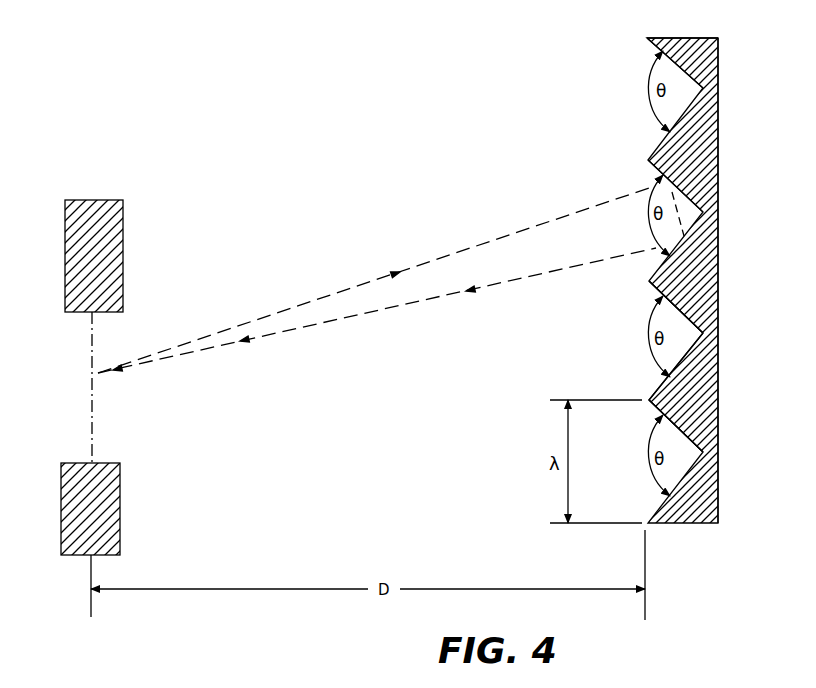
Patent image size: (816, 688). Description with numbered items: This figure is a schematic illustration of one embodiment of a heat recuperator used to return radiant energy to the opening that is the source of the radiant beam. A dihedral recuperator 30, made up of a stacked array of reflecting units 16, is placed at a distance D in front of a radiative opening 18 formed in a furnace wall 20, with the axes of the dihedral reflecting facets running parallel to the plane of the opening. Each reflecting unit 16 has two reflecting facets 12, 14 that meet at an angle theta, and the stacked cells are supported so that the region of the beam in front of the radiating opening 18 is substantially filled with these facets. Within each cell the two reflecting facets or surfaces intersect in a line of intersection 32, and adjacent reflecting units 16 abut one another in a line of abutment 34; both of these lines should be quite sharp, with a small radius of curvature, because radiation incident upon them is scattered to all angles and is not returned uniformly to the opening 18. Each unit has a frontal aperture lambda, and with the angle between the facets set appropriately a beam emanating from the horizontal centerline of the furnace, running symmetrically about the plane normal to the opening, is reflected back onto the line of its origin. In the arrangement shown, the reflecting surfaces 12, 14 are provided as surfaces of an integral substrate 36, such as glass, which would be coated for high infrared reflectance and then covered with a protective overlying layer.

The reflecting facet 12 is at (649, 398).
The reflecting facet 14 is at (654, 291).
The reflecting unit 16 is at (705, 76).
The radiative opening 18 is at (71, 463).
The furnace wall 20 is at (66, 530).
The dihedral recuperator 30 is at (651, 528).
The line of intersection 32 is at (722, 334).
The line of abutment 34 is at (654, 280).
The integral substrate 36 is at (700, 38).